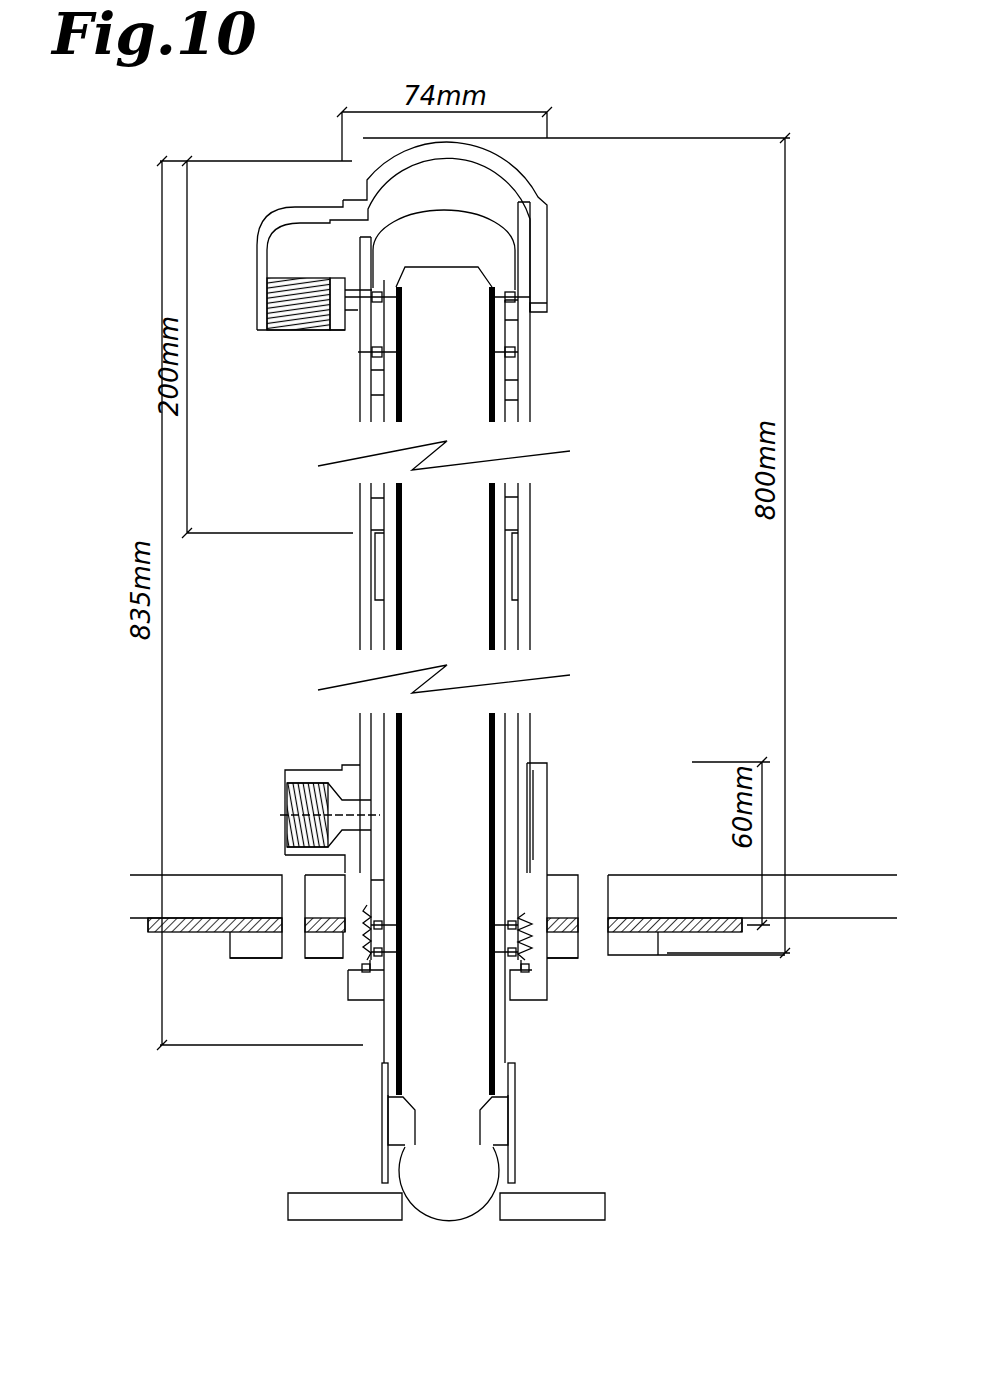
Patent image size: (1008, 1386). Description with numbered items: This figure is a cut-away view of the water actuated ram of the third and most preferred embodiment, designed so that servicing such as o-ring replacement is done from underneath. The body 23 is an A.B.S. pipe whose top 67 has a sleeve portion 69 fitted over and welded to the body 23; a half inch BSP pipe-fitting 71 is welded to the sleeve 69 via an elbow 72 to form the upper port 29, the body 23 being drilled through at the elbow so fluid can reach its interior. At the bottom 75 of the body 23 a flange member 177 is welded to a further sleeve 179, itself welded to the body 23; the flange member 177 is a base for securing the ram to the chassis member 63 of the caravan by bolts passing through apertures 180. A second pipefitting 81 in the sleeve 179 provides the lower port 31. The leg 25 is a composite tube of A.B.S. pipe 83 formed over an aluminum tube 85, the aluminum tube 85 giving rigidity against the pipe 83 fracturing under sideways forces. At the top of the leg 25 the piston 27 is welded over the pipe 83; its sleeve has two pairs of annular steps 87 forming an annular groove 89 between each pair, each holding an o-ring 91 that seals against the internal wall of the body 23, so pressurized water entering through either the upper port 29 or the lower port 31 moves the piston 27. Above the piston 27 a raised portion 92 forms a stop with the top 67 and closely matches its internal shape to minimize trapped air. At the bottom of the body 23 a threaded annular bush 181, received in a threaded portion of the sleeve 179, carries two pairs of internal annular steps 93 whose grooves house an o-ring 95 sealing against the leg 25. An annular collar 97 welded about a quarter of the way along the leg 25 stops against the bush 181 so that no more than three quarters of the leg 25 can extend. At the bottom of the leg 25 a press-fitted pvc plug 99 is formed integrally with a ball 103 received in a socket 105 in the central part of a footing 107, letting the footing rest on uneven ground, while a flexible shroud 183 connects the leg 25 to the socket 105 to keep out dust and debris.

The body 23 is at (528, 377).
The leg 25 is at (527, 412).
The piston 27 is at (520, 323).
The upper port 29 is at (290, 333).
The lower port 31 is at (287, 800).
The chassis member 63 is at (213, 890).
The top 67 is at (512, 173).
The sleeve portion 69 is at (537, 248).
The pipe-fitting 71 is at (260, 316).
The elbow 72 is at (284, 222).
The bottom 75 is at (682, 1030).
The pipefitting 81 is at (318, 770).
The A.B.S. pipe 83 is at (383, 395).
The aluminum tube 85 is at (402, 357).
The annular steps 87 is at (402, 295).
The annular groove 89 is at (533, 357).
The o-ring 91 is at (515, 297).
The raised portion 92 is at (482, 215).
The internal annular steps 93 is at (330, 1000).
The o-ring 95 is at (385, 947).
The annular collar 97 is at (380, 582).
The pvc plug 99 is at (418, 1053).
The ball 103 is at (448, 1193).
The socket 105 is at (493, 1200).
The footing 107 is at (543, 1207).
The flange member 177 is at (285, 960).
The further sleeve 179 is at (552, 805).
The apertures 180 is at (292, 948).
The threaded annular bush 181 is at (515, 990).
The shroud 183 is at (380, 1133).